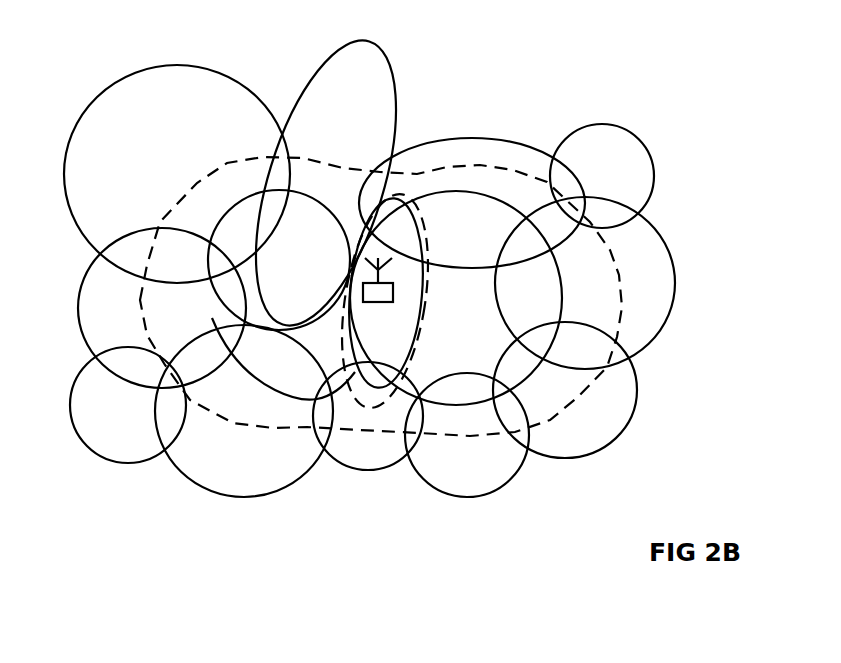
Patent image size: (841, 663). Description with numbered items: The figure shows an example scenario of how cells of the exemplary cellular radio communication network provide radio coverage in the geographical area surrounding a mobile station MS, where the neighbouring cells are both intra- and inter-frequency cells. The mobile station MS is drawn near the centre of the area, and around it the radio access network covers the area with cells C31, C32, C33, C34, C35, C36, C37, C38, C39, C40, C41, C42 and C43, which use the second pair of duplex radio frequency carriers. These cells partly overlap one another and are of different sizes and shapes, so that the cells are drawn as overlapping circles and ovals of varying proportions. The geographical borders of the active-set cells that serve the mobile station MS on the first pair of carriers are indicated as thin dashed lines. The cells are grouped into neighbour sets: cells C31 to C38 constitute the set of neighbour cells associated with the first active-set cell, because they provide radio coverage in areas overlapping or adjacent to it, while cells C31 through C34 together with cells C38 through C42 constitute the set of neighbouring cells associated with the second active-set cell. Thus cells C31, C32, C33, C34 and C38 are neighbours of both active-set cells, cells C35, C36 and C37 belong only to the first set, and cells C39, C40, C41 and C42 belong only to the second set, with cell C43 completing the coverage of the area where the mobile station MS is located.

The cell C31 is at (279, 272).
The cell C32 is at (456, 298).
The cell C33 is at (472, 203).
The cell C34 is at (326, 183).
The cell C35 is at (177, 174).
The cell C36 is at (162, 308).
The cell C37 is at (244, 411).
The cell C38 is at (368, 416).
The cell C39 is at (467, 435).
The cell C40 is at (565, 390).
The cell C41 is at (585, 283).
The cell C42 is at (602, 176).
The cell C43 is at (128, 405).
The mobile station MS is at (375, 302).